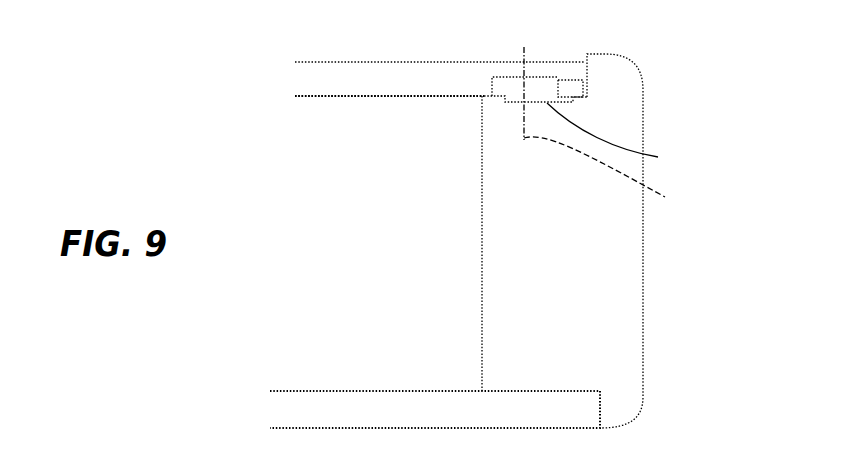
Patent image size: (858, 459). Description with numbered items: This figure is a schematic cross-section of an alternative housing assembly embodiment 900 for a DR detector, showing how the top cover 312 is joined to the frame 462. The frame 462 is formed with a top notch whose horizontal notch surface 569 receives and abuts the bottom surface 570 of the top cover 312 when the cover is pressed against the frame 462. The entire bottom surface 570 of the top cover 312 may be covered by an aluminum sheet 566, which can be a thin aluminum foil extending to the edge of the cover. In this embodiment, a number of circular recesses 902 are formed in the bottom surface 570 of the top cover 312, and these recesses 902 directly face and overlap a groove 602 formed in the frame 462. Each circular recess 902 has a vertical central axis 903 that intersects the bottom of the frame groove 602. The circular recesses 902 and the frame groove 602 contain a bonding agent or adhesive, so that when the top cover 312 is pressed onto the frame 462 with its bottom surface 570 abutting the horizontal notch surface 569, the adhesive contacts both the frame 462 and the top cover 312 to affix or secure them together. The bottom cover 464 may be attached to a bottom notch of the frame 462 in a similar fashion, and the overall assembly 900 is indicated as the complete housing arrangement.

The top cover 312 is at (293, 83).
The aluminum sheet 566 is at (384, 97).
The bottom surface 570 is at (433, 97).
The horizontal notch surface 569 is at (485, 96).
The circular recesses 902 is at (558, 82).
The groove 602 is at (626, 137).
The vertical central axis 903 is at (615, 182).
The frame 462 is at (615, 316).
The bottom cover 464 is at (300, 411).
The assembly embodiment 900 is at (754, 281).